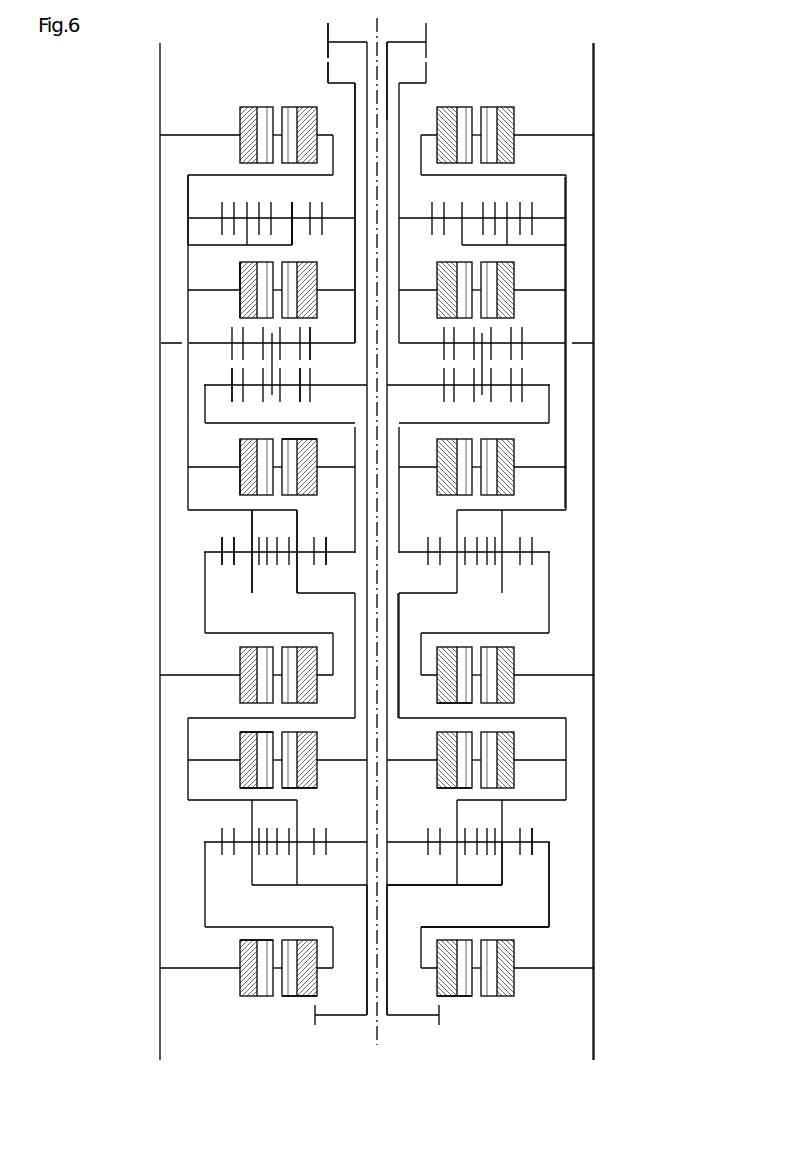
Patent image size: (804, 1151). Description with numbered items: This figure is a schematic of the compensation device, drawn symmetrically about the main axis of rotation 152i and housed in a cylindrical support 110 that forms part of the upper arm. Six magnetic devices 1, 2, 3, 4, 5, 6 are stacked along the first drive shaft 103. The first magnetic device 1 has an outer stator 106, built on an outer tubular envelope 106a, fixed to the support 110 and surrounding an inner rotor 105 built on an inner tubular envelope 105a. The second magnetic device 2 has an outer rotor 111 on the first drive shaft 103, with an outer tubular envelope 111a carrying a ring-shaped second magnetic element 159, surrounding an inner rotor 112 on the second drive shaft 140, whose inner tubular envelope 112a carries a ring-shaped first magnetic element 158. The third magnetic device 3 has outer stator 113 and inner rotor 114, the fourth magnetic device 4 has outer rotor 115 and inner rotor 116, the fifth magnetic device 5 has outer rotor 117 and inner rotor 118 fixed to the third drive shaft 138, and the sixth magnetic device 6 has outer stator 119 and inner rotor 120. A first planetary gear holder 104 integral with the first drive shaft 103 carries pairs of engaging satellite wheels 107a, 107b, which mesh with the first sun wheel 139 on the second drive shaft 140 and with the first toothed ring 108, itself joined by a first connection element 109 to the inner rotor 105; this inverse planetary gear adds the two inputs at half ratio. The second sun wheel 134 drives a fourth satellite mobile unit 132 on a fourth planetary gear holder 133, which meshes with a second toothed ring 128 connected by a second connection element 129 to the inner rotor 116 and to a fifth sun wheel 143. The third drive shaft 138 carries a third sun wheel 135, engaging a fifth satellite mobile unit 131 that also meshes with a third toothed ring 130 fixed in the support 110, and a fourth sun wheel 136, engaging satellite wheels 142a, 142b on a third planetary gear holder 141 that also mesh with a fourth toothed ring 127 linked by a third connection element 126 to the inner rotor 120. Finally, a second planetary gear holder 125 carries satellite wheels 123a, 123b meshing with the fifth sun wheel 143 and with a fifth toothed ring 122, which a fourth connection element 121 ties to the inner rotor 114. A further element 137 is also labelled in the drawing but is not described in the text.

The first magnetic device 1 is at (236, 957).
The second magnetic device 2 is at (236, 777).
The third magnetic device 3 is at (236, 662).
The fourth magnetic device 4 is at (190, 508).
The fifth magnetic device 5 is at (188, 292).
The sixth magnetic device 6 is at (236, 126).
The first drive shaft 103 is at (367, 977).
The first planetary gear holder 104 is at (495, 895).
The inner rotor 105 is at (455, 997).
The inner tubular envelope 105a is at (307, 992).
The outer stator 106 is at (515, 972).
The outer tubular envelope 106a is at (247, 943).
The satellite wheel 107a is at (505, 875).
The satellite wheel 107b is at (472, 835).
The first toothed ring 108 is at (535, 830).
The first connection element 109 is at (550, 847).
The support 110 is at (593, 548).
The outer rotor 111 is at (515, 745).
The outer tubular envelope 111a is at (247, 785).
The inner rotor 112 is at (453, 787).
The inner tubular envelope 112a is at (305, 787).
The outer stator 113 is at (515, 662).
The inner rotor 114 is at (447, 703).
The outer rotor 115 is at (515, 452).
The inner rotor 116 is at (440, 495).
The outer rotor 117 is at (515, 270).
The inner rotor 118 is at (445, 318).
The outer stator 119 is at (515, 153).
The inner rotor 120 is at (452, 107).
The fourth connection element 121 is at (250, 592).
The fifth toothed ring 122 is at (218, 548).
The satellite wheel 123a is at (233, 567).
The satellite wheel 123b is at (325, 566).
The second planetary gear holder 125 is at (297, 578).
The third connection element 126 is at (235, 258).
The fourth toothed ring 127 is at (236, 273).
The second toothed ring 128 is at (240, 392).
The second connection element 129 is at (550, 407).
The third toothed ring 130 is at (320, 355).
The fifth satellite mobile unit 131 is at (240, 320).
The fourth satellite mobile unit 132 is at (310, 388).
The fourth planetary gear holder 133 is at (290, 440).
The second sun wheel 134 is at (236, 483).
The third sun wheel 135 is at (258, 378).
The fourth sun wheel 136 is at (290, 203).
The input shaft 137 is at (326, 82).
The third drive shaft 138 is at (353, 112).
The first sun wheel 139 is at (460, 927).
The second drive shaft 140 is at (387, 72).
The third planetary gear holder 141 is at (205, 200).
The satellite wheel 142a is at (221, 228).
The satellite wheel 142b is at (292, 236).
The fifth sun wheel 143 is at (330, 540).
The main axis of rotation 152i is at (390, 990).
The first magnetic element 158 is at (283, 785).
The second magnetic element 159 is at (267, 742).